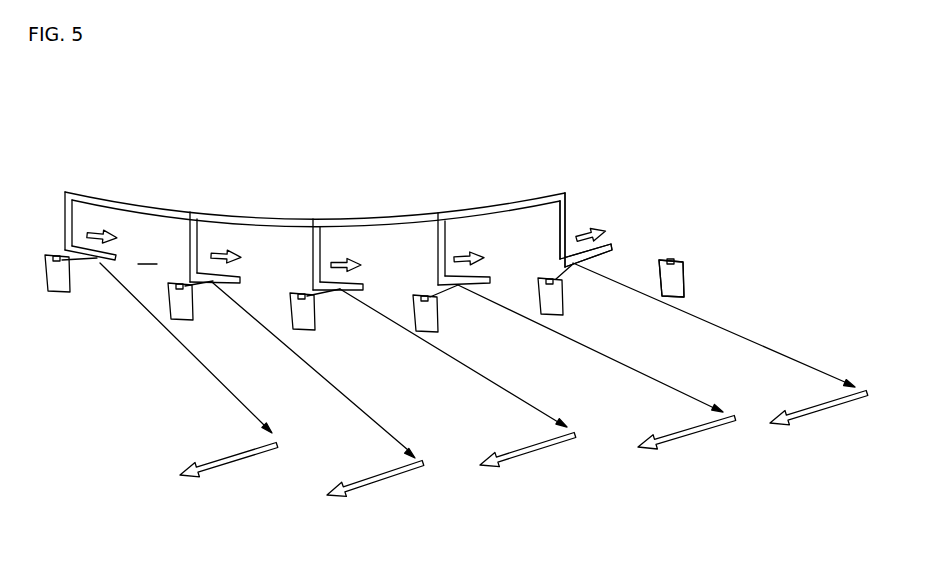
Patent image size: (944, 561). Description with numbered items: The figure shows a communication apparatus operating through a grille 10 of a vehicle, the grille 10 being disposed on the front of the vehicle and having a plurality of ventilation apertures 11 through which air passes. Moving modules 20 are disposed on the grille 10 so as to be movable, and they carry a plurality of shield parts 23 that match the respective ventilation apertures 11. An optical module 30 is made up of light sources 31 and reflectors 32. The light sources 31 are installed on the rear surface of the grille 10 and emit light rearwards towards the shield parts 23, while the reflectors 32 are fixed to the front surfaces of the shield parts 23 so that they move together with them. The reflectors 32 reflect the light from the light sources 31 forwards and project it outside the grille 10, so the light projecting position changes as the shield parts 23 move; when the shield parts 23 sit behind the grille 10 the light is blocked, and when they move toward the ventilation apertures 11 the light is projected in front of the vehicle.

The grille 10 is at (178, 307).
The ventilation apertures 11 is at (148, 263).
The moving modules 20 is at (390, 193).
The shield parts 23 is at (314, 255).
The optical module 30 is at (716, 160).
The light sources 31 is at (548, 278).
The reflectors 32 is at (110, 265).